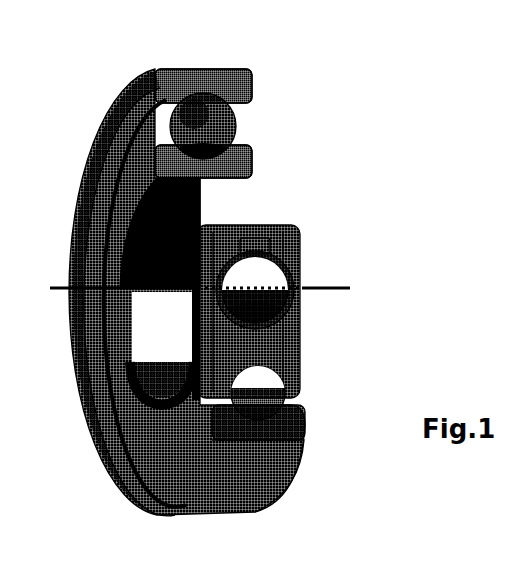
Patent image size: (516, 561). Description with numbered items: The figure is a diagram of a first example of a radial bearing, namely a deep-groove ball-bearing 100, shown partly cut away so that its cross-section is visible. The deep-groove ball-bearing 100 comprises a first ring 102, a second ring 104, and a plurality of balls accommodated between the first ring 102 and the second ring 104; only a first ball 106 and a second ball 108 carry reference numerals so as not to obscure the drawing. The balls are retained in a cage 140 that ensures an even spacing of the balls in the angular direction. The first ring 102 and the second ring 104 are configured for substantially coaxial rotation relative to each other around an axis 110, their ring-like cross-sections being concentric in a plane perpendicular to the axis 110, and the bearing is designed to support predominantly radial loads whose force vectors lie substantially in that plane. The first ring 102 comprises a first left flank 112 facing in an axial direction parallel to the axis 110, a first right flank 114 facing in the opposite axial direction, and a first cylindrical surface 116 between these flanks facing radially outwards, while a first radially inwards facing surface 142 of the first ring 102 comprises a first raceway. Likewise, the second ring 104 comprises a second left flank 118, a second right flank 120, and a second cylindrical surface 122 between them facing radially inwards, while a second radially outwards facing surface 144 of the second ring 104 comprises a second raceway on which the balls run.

The deep-groove ball-bearing 100 is at (448, 389).
The first ring 102 is at (184, 80).
The second ring 104 is at (236, 172).
The first ball 106 is at (260, 390).
The second ball 108 is at (205, 114).
The axis 110 is at (46, 283).
The first left flank 112 is at (150, 490).
The first right flank 114 is at (258, 87).
The first cylindrical surface 116 is at (262, 494).
The second left flank 118 is at (147, 412).
The second right flank 120 is at (258, 162).
The second cylindrical surface 122 is at (165, 207).
The cage 140 is at (217, 376).
The first radially inwards facing surface 142 is at (127, 444).
The second radially outwards facing surface 144 is at (240, 231).